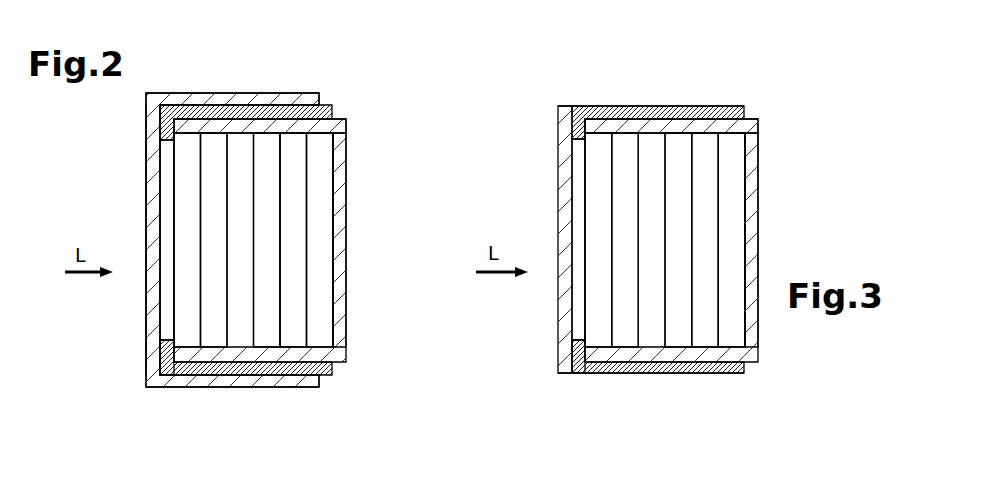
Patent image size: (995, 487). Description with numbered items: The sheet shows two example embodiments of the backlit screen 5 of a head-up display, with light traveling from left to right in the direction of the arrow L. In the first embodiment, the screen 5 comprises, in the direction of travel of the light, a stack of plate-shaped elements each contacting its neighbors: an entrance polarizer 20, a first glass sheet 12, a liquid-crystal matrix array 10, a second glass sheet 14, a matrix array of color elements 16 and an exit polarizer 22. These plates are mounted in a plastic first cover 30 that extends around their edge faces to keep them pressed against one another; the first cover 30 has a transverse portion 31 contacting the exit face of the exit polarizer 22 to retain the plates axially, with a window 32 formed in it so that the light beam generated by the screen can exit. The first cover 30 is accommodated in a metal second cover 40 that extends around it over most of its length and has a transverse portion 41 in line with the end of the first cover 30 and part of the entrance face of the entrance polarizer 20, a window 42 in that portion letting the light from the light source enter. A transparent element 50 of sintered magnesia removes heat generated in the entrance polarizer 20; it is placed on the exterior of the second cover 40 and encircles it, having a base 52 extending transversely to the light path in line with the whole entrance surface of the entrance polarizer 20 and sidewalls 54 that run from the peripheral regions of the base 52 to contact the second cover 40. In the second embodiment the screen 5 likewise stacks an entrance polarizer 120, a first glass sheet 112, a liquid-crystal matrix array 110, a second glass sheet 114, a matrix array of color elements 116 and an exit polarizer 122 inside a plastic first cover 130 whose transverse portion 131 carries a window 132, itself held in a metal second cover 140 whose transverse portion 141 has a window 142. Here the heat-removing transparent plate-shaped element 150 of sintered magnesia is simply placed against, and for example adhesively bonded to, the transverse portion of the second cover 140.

In FIG. 2, the screen 5 is at (140, 393).
In FIG. 3, the screen 5 is at (564, 101).
In FIG. 2, the liquid-crystal matrix array 10 is at (240, 340).
In FIG. 2, the first glass sheet 12 is at (215, 340).
In FIG. 2, the second glass sheet 14 is at (265, 340).
In FIG. 2, the matrix array of color elements 16 is at (295, 340).
In FIG. 2, the entrance polarizer 20 is at (190, 340).
In FIG. 2, the exit polarizer 22 is at (320, 335).
In FIG. 2, the first cover 30 is at (270, 118).
In FIG. 2, the transverse portion 31 is at (338, 128).
In FIG. 2, the window 32 is at (349, 176).
In FIG. 2, the second cover 40 is at (326, 106).
In FIG. 2, the transverse portion 41 is at (166, 350).
In FIG. 2, the window 42 is at (168, 190).
In FIG. 2, the transparent element 50 is at (200, 90).
In FIG. 2, the base 52 is at (153, 226).
In FIG. 2, the sidewalls 54 is at (245, 98).
In FIG. 3, the liquid-crystal matrix array 110 is at (652, 340).
In FIG. 3, the first glass sheet 112 is at (626, 340).
In FIG. 3, the second glass sheet 114 is at (676, 340).
In FIG. 3, the matrix array of color elements 116 is at (702, 140).
In FIG. 3, the entrance polarizer 120 is at (603, 340).
In FIG. 3, the exit polarizer 122 is at (730, 140).
In FIG. 3, the first cover 130 is at (640, 128).
In FIG. 3, the transverse portion 131 is at (758, 126).
In FIG. 3, the window 132 is at (764, 182).
In FIG. 3, the second cover 140 is at (620, 113).
In FIG. 3, the transverse portion 141 is at (572, 350).
In FIG. 3, the window 142 is at (563, 223).
In FIG. 3, the transparent plate-shaped element 150 is at (566, 180).